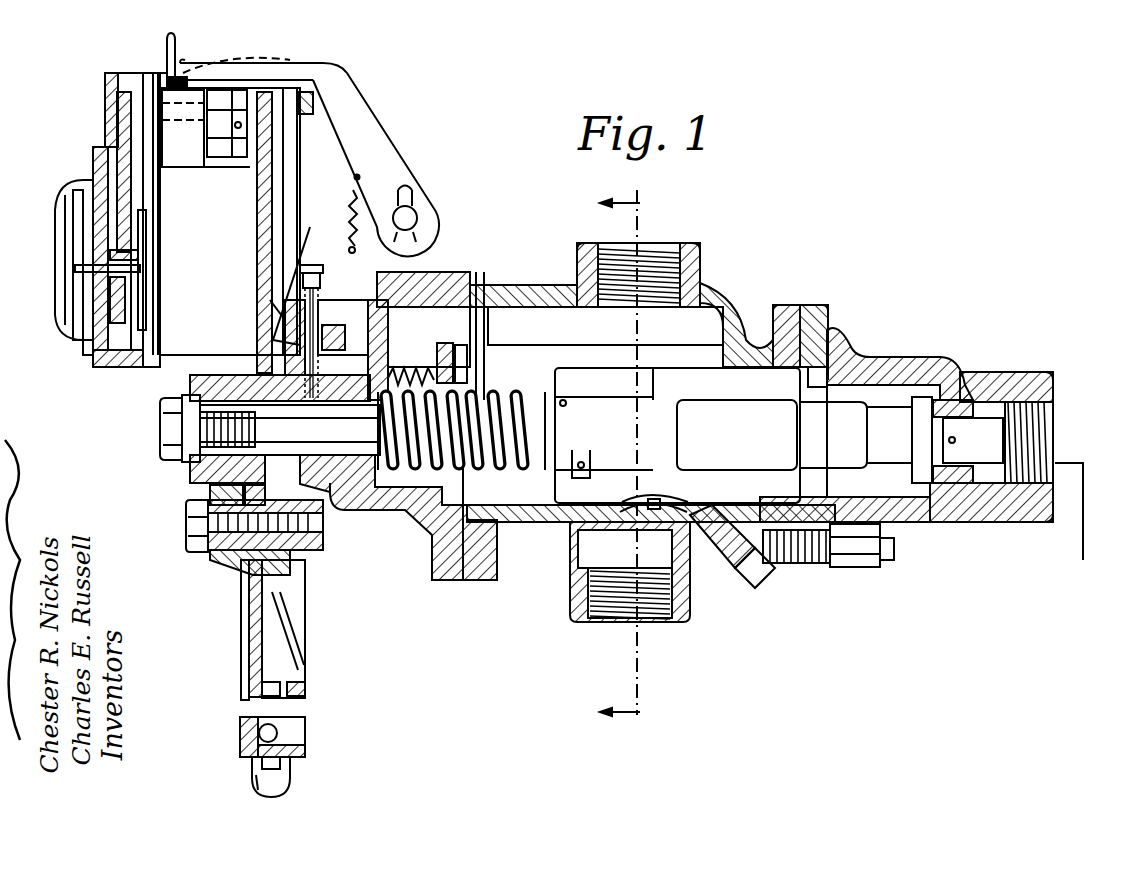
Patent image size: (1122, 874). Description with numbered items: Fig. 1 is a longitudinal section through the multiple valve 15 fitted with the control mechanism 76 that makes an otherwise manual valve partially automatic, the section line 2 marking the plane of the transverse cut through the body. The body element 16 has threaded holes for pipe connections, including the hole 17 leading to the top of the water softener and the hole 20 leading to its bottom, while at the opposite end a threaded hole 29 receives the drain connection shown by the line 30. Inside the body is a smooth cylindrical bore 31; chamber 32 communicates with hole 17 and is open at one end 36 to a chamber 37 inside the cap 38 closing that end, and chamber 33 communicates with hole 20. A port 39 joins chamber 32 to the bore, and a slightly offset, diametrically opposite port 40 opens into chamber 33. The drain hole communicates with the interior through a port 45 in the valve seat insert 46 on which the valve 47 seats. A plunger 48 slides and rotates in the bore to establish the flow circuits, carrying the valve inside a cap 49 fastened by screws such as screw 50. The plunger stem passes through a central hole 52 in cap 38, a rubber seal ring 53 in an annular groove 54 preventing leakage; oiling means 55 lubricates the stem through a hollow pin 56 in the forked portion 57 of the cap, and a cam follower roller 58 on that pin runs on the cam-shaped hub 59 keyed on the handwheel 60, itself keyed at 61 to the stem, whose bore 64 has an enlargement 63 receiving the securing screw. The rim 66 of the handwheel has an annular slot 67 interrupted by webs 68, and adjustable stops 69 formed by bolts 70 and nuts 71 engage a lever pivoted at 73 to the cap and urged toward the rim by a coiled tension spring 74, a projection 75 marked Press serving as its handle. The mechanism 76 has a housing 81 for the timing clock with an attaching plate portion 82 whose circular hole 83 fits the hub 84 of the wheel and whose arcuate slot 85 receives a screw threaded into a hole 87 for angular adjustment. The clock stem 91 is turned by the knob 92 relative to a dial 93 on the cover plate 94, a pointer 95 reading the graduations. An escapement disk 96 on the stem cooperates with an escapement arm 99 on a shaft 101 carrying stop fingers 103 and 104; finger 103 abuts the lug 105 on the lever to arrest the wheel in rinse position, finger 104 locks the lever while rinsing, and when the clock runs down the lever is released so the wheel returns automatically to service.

The section line 2- 2 is at (629, 446).
The multiple valve 15 is at (725, 300).
The body element 16 is at (531, 287).
The threaded hole 17 is at (678, 246).
The hole 20 is at (657, 622).
The threaded hole 29 is at (1040, 432).
The line 30 is at (1083, 522).
The cylindrical bore 31 is at (770, 330).
The chamber 32 is at (605, 326).
The chamber 33 is at (625, 549).
The open end 36 is at (486, 315).
The chamber 37 is at (445, 312).
The cap 38 is at (432, 522).
The port 39 is at (706, 352).
The port 40 is at (630, 507).
The port 45 is at (990, 388).
The valve seat insert 46 is at (962, 395).
The valve 47 is at (930, 523).
The plunger 48 is at (745, 485).
The cap 49 is at (870, 360).
The screw 50 is at (880, 560).
The central hole 52 is at (332, 472).
The rubber seal ring 53 is at (340, 400).
The annular groove 54 is at (330, 400).
The oiling means 55 is at (315, 265).
The hollow pin 56 is at (275, 305).
The forked portion 57 is at (280, 300).
The cam follower roller 58 is at (338, 322).
The cam-shaped hub 59 is at (278, 328).
The handwheel 60 is at (245, 628).
The key 61 is at (178, 398).
The enlargement 63 is at (190, 465).
The bore 64 is at (278, 438).
The rim 66 is at (305, 752).
The annular slot 67 is at (302, 690).
The webs 68 is at (300, 640).
The adjustable stops 69 is at (292, 785).
The bolts 70 is at (280, 735).
The nuts 71 is at (256, 780).
The pivot 73 is at (432, 206).
The coiled tension spring 74 is at (352, 190).
The projection 75 is at (178, 42).
The control mechanism 76 is at (165, 75).
The housing 81 is at (265, 218).
The attaching plate portion 82 is at (228, 568).
The circular hole 83 is at (215, 490).
The hub 84 is at (208, 385).
The arcuate slot 85 is at (205, 555).
The hole 87 is at (323, 532).
The stem 91 is at (145, 268).
The knob 92 is at (68, 335).
The dial 93 is at (92, 350).
The cover plate 94 is at (103, 148).
The pointer 95 is at (65, 192).
The escapement disk 96 is at (146, 217).
The escapement arm 99 is at (140, 160).
The shaft 101 is at (230, 221).
The stop finger 103 is at (222, 138).
The stop finger 104 is at (309, 143).
The lug 105 is at (185, 70).